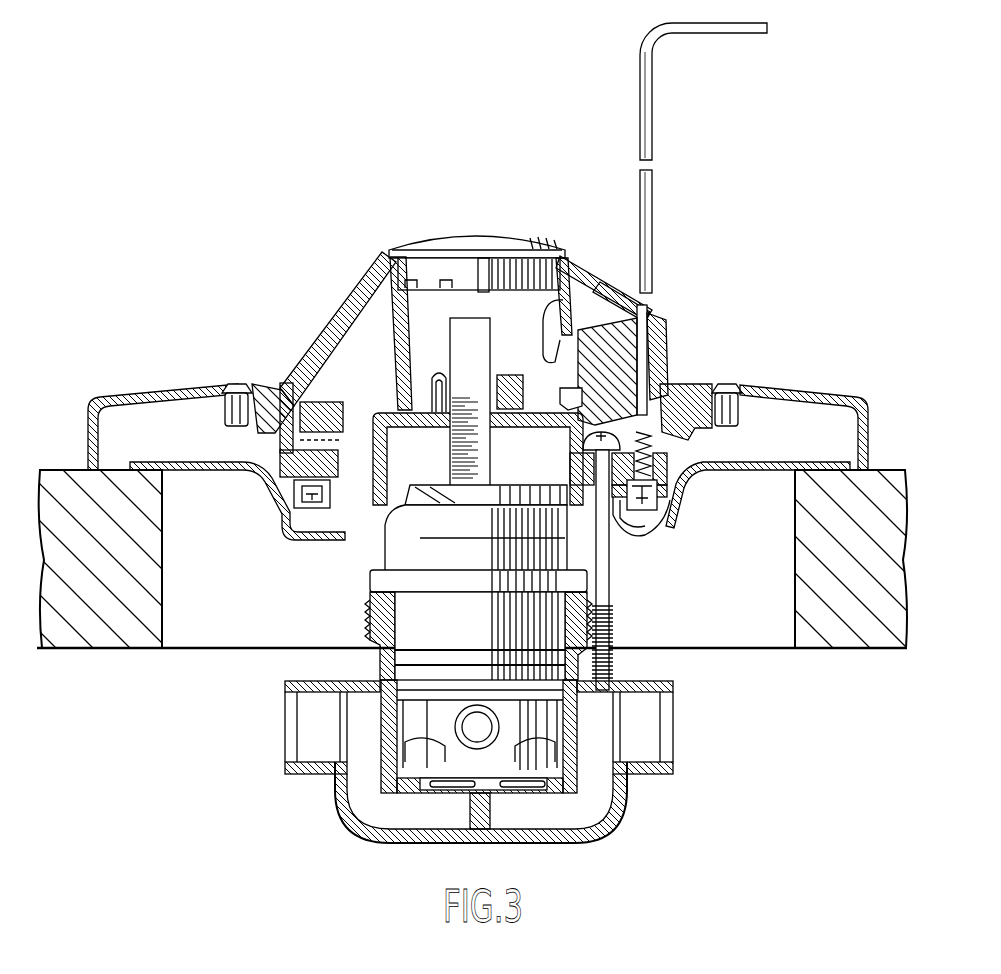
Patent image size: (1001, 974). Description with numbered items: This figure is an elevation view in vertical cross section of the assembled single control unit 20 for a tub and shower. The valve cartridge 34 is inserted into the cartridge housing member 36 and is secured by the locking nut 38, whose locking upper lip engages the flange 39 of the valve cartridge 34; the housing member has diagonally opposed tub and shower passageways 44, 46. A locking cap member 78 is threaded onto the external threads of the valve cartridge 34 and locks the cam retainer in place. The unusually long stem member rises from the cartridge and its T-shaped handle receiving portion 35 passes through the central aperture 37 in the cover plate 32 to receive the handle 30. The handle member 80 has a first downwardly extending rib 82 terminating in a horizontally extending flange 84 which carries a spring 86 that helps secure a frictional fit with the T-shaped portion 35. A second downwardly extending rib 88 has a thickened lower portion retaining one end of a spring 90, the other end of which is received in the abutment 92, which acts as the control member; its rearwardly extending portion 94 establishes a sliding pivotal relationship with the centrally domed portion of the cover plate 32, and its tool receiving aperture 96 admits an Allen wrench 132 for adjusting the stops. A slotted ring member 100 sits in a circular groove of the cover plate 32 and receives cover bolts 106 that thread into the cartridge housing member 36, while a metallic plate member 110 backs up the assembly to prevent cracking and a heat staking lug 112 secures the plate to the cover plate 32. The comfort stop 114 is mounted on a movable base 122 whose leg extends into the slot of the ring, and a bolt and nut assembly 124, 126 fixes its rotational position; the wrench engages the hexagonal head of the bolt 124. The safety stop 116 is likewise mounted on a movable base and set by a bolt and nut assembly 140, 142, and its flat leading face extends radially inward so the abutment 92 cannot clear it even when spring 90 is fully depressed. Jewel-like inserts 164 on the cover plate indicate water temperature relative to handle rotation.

The faucet assembly 20 is at (276, 236).
The handle 30 is at (300, 326).
The cover plate 32 is at (140, 393).
The valve cartridge 34 is at (378, 541).
The T-shaped handle receiving portion 35 is at (490, 452).
The cartridge housing member 36 is at (350, 836).
The central aperture 37 is at (455, 430).
The locking nut 38 is at (370, 600).
The flange 39 is at (385, 560).
The tub passageway 44 is at (300, 780).
The shower passageway 46 is at (655, 780).
The locking cap member 78 is at (396, 512).
The handle member 80 is at (346, 305).
The first downwardly extending rib 82 is at (392, 348).
The horizontally extending flange 84 is at (508, 372).
The spring 86 is at (440, 375).
The second downwardly extending rib 88 is at (572, 288).
The spring 90 is at (590, 304).
The abutment 92 is at (640, 318).
The rearwardly extending portion 94 is at (566, 404).
The tool receiving aperture 96 is at (656, 328).
The slotted ring member 100 is at (690, 468).
The cover screws or bolts 106 is at (612, 592).
The metallic plate member 110 is at (676, 520).
The heat staking lug 112 is at (642, 528).
The comfort stop 114 is at (700, 392).
The safety stop 116 is at (346, 378).
The movable base 122 is at (607, 371).
The bolt 124 is at (662, 447).
The nut 126 is at (660, 500).
The Allen wrench 132 is at (652, 101).
The bolt 140 is at (298, 440).
The nut 142 is at (288, 508).
The jewel-like inserts 164 is at (240, 385).